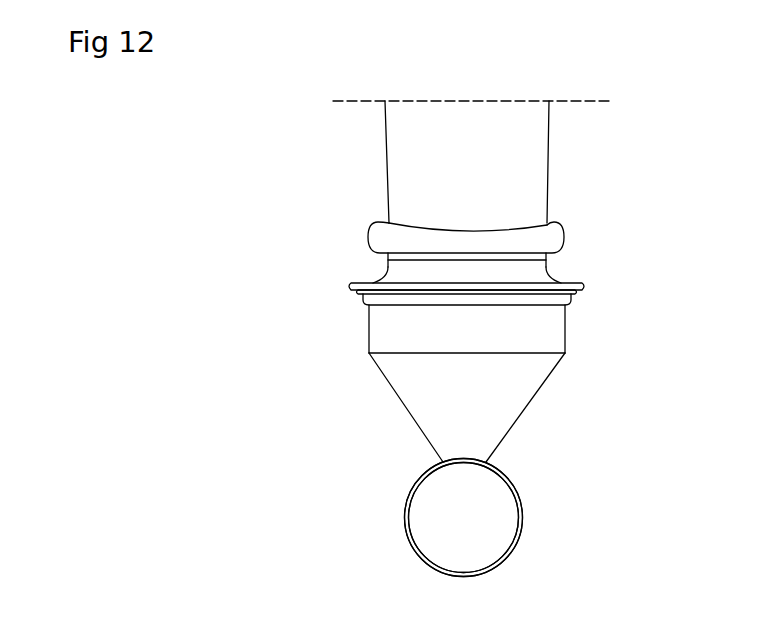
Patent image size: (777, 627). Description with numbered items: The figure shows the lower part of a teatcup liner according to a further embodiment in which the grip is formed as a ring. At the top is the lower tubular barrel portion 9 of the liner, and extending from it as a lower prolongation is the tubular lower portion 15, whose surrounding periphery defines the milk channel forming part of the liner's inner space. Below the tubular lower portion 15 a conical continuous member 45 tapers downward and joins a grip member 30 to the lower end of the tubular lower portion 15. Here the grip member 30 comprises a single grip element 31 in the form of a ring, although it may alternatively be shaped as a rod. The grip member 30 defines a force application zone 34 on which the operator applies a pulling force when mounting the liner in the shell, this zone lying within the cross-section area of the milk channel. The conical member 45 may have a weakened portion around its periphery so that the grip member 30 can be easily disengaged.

The tubular barrel portion 9 is at (480, 163).
The tubular lower portion 15 is at (525, 333).
The conical continuous member 45 is at (480, 401).
The grip member 30 is at (393, 467).
The grip element 31 is at (405, 528).
The force application zone 34 is at (468, 569).